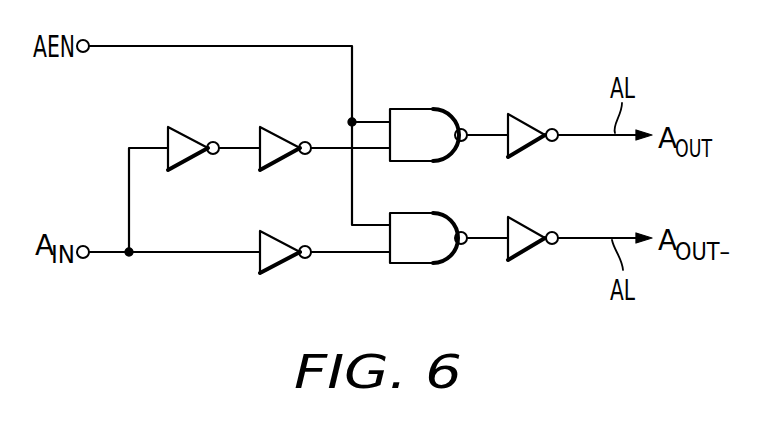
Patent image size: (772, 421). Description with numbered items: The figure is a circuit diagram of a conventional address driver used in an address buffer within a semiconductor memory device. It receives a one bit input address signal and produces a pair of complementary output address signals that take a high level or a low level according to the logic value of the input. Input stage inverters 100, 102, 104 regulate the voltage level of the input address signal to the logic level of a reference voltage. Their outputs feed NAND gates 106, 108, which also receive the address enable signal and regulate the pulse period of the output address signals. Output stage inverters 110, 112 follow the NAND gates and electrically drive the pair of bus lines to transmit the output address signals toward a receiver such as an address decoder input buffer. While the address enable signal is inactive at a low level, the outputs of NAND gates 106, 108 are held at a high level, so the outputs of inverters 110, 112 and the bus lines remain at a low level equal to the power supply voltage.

The input stage inverter 100 is at (200, 131).
The input stage inverter 102 is at (288, 131).
The input stage inverter 104 is at (290, 267).
The NAND gate 106 is at (428, 106).
The NAND gate 108 is at (423, 266).
The output stage inverter 110 is at (527, 119).
The output stage inverter 112 is at (527, 254).